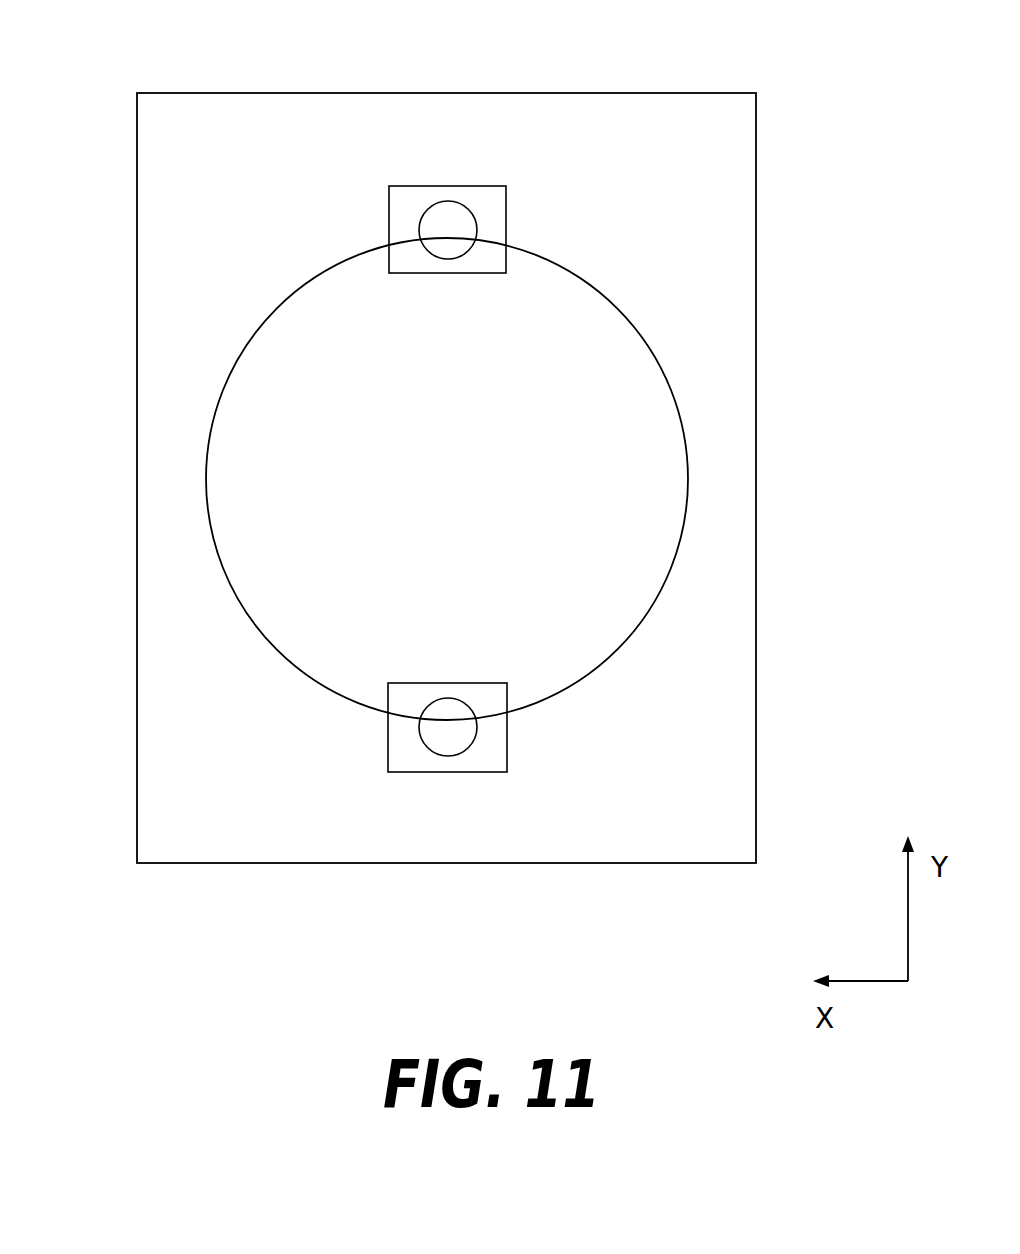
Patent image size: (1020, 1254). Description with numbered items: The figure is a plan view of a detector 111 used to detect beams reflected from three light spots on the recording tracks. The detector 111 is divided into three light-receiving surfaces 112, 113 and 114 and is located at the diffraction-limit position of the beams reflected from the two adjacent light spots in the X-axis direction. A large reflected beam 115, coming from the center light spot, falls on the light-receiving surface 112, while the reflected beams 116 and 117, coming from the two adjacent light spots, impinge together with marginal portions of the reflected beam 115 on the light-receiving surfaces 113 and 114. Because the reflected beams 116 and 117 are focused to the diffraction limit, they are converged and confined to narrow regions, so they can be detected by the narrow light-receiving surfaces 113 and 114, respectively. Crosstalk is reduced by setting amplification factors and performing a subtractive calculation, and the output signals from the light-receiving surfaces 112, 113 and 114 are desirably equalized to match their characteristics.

The detector 111 is at (494, 90).
The light-receiving surface 112 is at (740, 462).
The light-receiving surface 113 is at (506, 212).
The light-receiving surface 114 is at (507, 748).
The reflected beam 115 is at (205, 480).
The reflected beam 116 is at (417, 228).
The reflected beam 117 is at (417, 735).